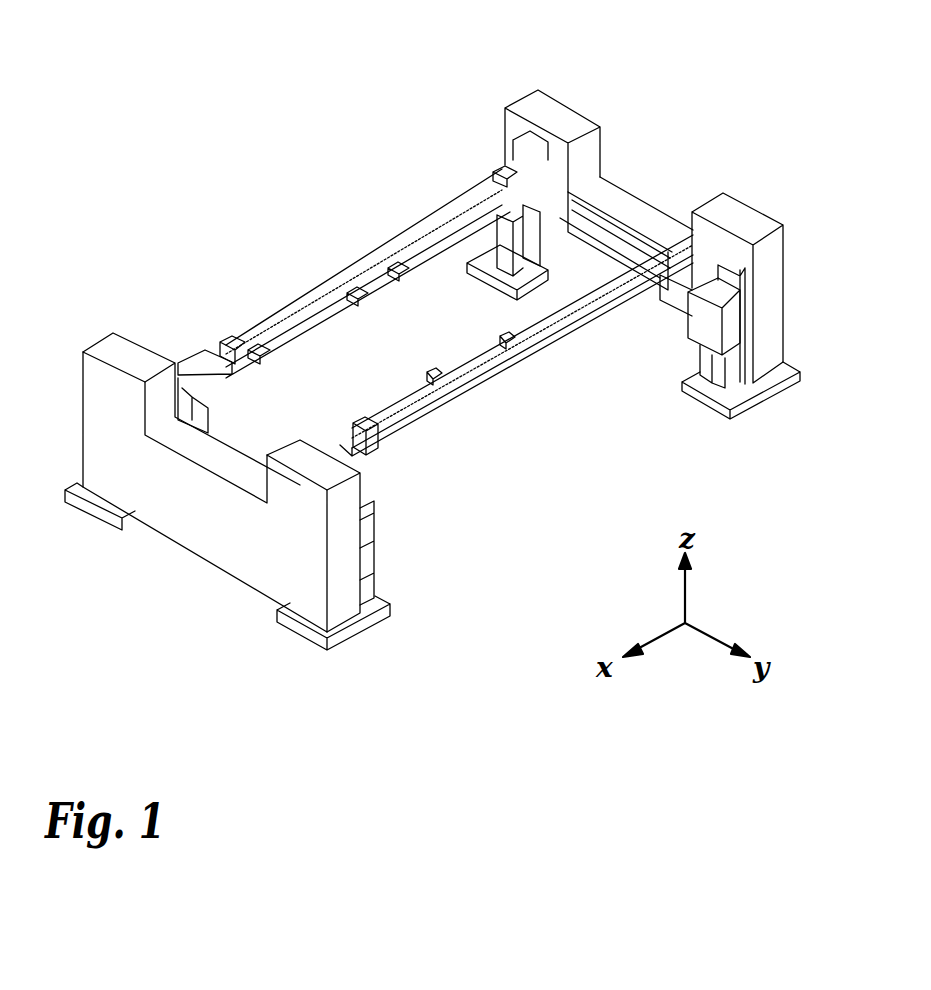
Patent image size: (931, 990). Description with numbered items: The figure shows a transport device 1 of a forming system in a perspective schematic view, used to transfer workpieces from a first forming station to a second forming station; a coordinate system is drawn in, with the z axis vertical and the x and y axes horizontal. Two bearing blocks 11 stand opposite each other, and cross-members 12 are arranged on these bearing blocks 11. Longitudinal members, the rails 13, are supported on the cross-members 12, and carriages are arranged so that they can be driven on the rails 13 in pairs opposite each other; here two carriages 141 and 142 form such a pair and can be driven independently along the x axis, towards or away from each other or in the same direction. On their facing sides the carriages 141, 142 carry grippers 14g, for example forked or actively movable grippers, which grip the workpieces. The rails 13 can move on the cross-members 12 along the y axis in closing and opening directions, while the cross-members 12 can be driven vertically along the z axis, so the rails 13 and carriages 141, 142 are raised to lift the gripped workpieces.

The transport device 1 is at (735, 75).
The bearing block 11 is at (182, 528).
The cross-member 12 is at (668, 285).
The rail 13 is at (212, 347).
The carriage 141 is at (296, 302).
The carriage 142 is at (443, 218).
The gripper 14g is at (364, 302).